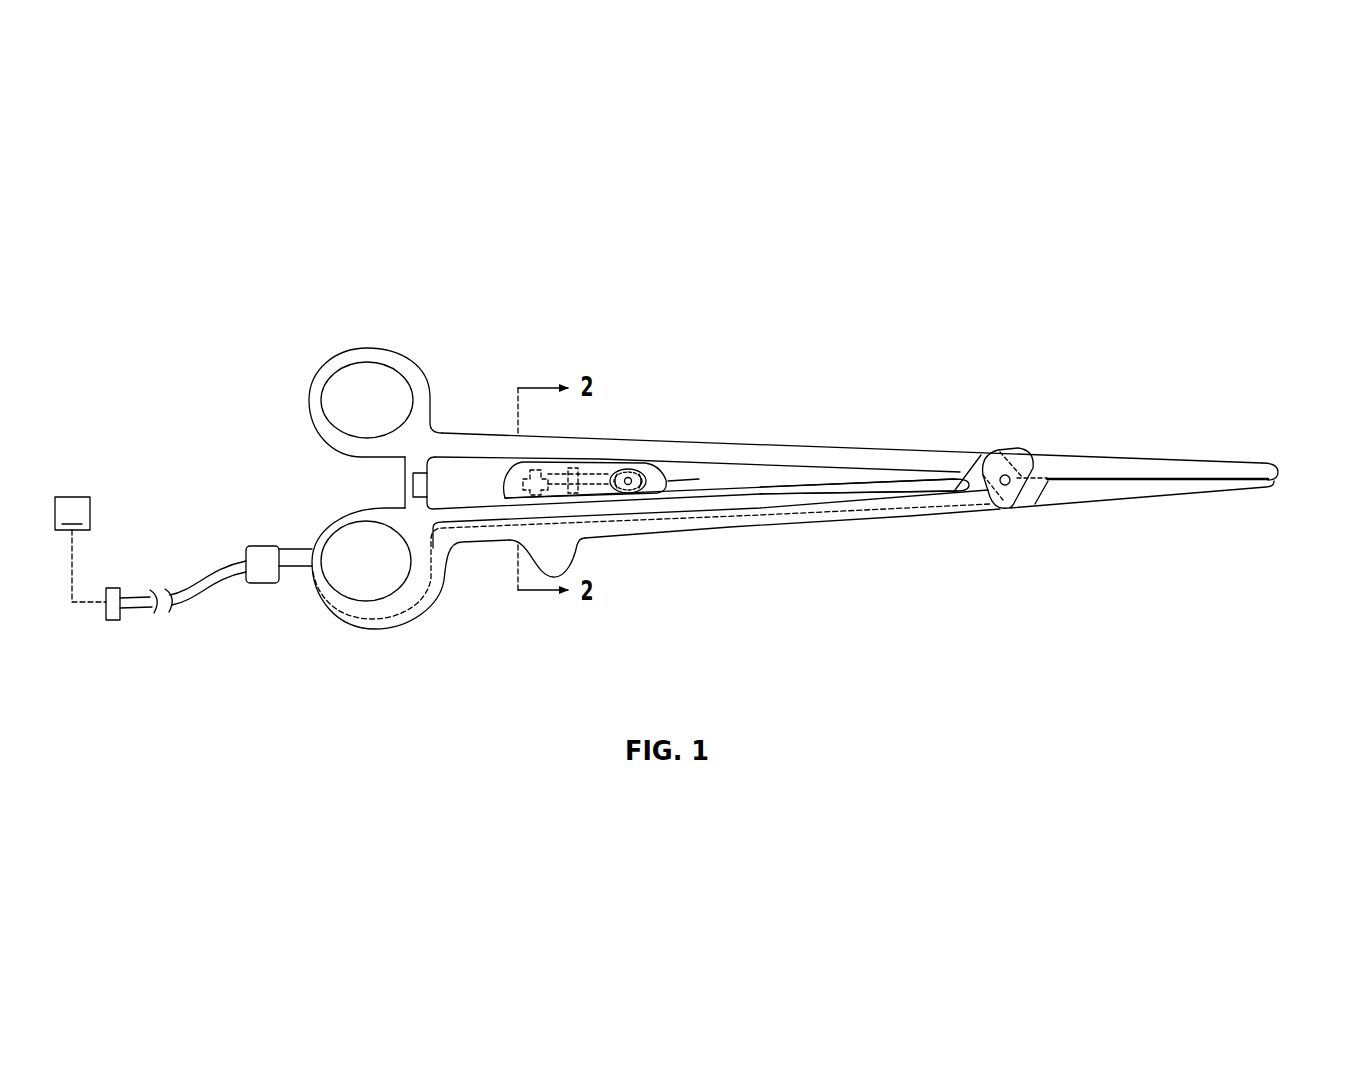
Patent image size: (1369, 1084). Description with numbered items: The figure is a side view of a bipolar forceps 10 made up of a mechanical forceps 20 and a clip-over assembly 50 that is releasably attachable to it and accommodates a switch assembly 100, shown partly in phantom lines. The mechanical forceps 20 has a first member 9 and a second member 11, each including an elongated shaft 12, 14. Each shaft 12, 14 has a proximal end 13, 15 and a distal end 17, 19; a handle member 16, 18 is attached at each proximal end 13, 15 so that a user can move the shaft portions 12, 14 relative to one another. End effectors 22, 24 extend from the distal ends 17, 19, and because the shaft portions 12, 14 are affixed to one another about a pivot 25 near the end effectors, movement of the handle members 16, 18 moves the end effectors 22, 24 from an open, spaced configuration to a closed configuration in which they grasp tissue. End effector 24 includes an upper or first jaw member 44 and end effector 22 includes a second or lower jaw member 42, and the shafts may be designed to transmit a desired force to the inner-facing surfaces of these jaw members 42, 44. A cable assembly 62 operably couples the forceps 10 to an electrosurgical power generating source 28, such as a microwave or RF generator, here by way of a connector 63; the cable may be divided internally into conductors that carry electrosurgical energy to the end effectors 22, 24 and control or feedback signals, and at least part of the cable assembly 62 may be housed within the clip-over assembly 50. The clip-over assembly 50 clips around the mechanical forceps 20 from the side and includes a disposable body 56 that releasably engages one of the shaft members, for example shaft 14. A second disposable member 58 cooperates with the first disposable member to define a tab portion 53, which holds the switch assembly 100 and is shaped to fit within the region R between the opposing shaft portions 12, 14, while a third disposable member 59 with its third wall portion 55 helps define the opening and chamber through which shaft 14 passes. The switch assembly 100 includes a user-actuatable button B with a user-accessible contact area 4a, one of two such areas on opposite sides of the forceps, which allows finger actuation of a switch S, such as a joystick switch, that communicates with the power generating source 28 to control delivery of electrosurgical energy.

The bipolar forceps 10 is at (884, 278).
The mechanical forceps 20 is at (512, 333).
The first member 9 is at (704, 437).
The elongated shaft 12 is at (818, 457).
The elongated shaft 14 is at (827, 499).
The handle member 16 is at (364, 347).
The handle member 18 is at (332, 506).
The proximal end 13 is at (439, 430).
The proximal end 15 is at (434, 507).
The distal end 17 is at (990, 452).
The pivot 25 is at (1010, 486).
The distal end 19 is at (992, 507).
The end effector 22 is at (1281, 486).
The end effector 24 is at (1281, 462).
The second or lower jaw member 42 is at (1150, 496).
The upper or first jaw member 44 is at (1153, 463).
The electrosurgical power generating source 28 is at (80, 549).
The cable assembly 62 is at (182, 578).
The connector 63 is at (113, 622).
The clip-over assembly 50 is at (461, 601).
The disposable body 56 is at (369, 634).
The tab portion 53 is at (501, 465).
The switch assembly 100 is at (599, 489).
The second member 11 is at (479, 538).
The third wall portion 55 is at (748, 514).
The second disposable member 58 is at (881, 477).
The third disposable member 59 is at (886, 520).
The user-accessible contact area 4a is at (696, 479).
The switch S is at (538, 456).
The user-actuatable button B is at (630, 460).
The region R is at (758, 477).